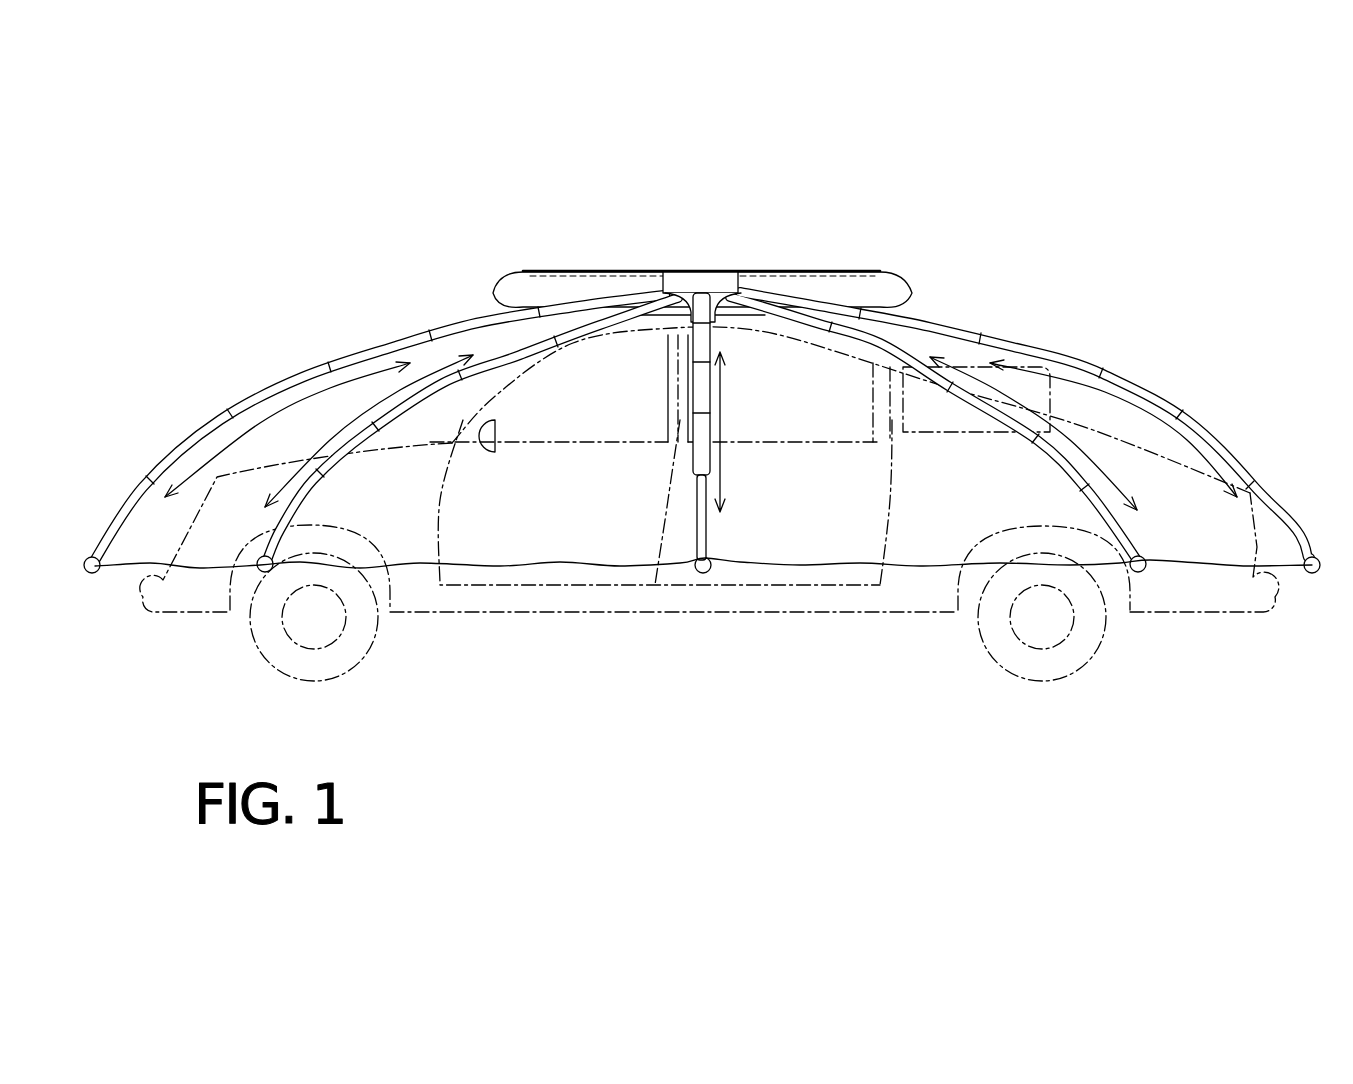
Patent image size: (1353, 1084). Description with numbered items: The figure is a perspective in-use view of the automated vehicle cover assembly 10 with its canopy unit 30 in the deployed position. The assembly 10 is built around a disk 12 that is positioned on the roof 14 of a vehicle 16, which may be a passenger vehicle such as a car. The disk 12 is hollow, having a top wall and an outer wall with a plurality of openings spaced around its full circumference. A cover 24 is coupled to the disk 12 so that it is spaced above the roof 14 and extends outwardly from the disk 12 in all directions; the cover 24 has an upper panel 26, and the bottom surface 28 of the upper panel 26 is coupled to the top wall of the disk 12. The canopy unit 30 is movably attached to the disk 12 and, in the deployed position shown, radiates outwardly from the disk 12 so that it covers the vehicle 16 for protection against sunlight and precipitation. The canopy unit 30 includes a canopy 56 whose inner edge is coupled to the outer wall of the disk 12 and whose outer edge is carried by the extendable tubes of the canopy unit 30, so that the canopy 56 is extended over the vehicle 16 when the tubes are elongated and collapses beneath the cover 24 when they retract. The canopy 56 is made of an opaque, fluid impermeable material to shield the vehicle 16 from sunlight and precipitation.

The automated vehicle cover assembly 10 is at (453, 138).
The disk 12 is at (665, 285).
The roof 14 is at (640, 322).
The vehicle 16 is at (888, 652).
The cover 24 is at (893, 282).
The upper panel 26 is at (818, 270).
The bottom surface 28 is at (745, 293).
The canopy unit 30 is at (1243, 435).
The canopy 56 is at (1210, 558).